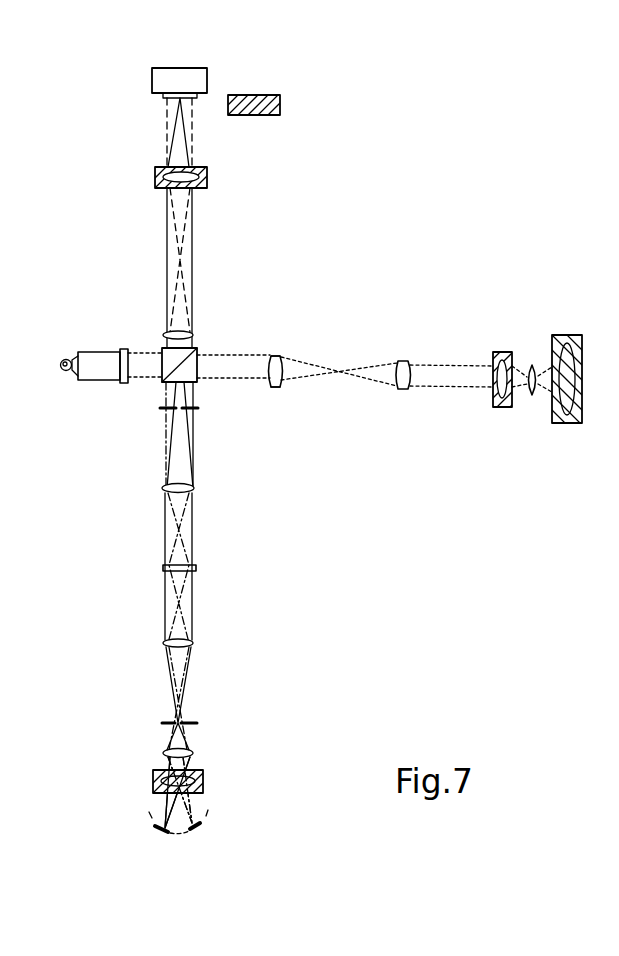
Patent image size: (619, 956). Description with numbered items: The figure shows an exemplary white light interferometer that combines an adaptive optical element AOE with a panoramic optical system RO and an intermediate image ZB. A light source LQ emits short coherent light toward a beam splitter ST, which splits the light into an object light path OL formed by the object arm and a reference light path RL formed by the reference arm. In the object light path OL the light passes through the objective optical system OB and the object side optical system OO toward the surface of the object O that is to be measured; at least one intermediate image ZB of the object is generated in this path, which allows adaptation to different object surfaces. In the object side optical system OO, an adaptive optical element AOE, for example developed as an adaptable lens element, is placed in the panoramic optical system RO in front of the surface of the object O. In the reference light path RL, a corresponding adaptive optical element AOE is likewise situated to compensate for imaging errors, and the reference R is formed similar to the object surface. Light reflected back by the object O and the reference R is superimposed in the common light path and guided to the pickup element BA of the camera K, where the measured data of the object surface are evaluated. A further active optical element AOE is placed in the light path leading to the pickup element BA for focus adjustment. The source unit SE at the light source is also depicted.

The camera K is at (208, 76).
The pickup element BA is at (161, 98).
The adaptive optical element AOE is at (281, 108).
The objective optical system OB is at (163, 332).
The beam splitter ST is at (198, 348).
The light source unit SE is at (105, 383).
The light source LQ is at (65, 372).
The reference light path RL is at (355, 355).
The panoramic optical system RO is at (480, 403).
The reference R is at (567, 335).
The object light path OL is at (152, 542).
The object side optical system OO is at (205, 747).
The intermediate image ZB is at (160, 723).
The object O is at (210, 832).